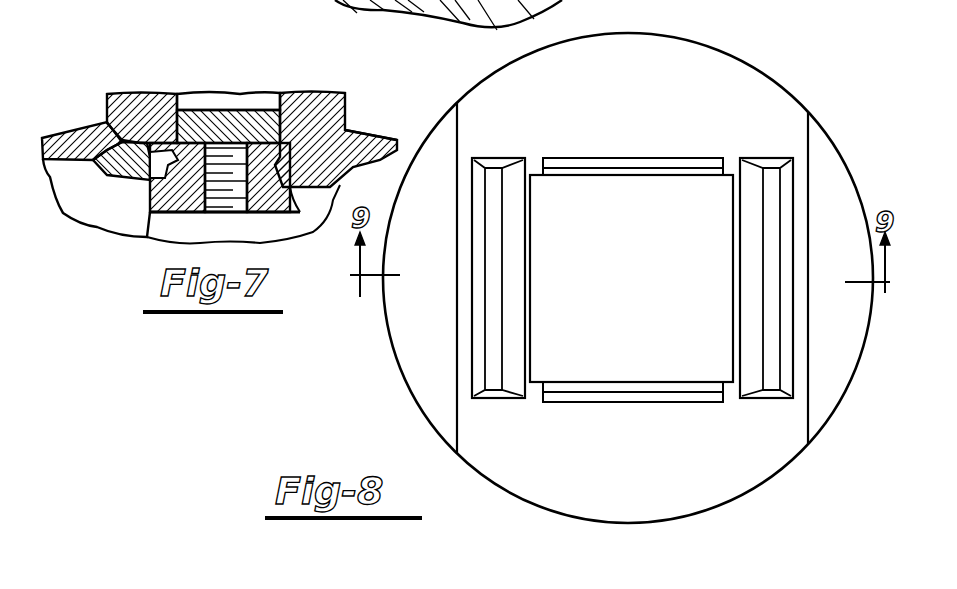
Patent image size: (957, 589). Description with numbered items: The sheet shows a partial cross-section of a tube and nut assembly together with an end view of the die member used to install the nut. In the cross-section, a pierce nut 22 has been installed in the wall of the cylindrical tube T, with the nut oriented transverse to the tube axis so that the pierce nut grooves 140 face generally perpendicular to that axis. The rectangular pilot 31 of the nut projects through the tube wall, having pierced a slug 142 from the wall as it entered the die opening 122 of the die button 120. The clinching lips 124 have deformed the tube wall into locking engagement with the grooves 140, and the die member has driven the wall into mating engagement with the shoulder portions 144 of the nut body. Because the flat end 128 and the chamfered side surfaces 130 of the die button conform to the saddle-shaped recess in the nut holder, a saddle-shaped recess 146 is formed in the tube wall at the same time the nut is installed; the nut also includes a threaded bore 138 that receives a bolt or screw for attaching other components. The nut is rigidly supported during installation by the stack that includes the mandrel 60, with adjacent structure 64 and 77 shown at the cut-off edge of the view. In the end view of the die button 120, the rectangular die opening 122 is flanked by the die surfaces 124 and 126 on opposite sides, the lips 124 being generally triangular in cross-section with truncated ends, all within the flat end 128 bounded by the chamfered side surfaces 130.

In FIG. 7, the tube T is at (83, 147).
In FIG. 7, the pierce nut 22 is at (155, 217).
In FIG. 7, the pilot 31 is at (310, 102).
In FIG. 7, the mandrel 60 is at (358, 4).
In FIG. 7, the housing portion 64 is at (473, 8).
In FIG. 7, the housing portion 77 is at (427, 5).
In FIG. 8, the die button 120 is at (705, 100).
In FIG. 7, the die opening 122 is at (187, 100).
In FIG. 8, the die opening 122 is at (530, 247).
In FIG. 7, the die surfaces 124 is at (103, 172).
In FIG. 8, the die surfaces 124 is at (508, 370).
In FIG. 8, the die surfaces 126 is at (675, 158).
In FIG. 8, the end 128 is at (640, 82).
In FIG. 8, the chamfered side surfaces 130 is at (432, 325).
In FIG. 7, the threaded bore 138 is at (238, 196).
In FIG. 7, the pierce nut grooves 140 is at (140, 183).
In FIG. 7, the slug 142 is at (225, 110).
In FIG. 7, the shoulder portions 144 is at (320, 225).
In FIG. 7, the saddle-shaped recess 146 is at (142, 147).